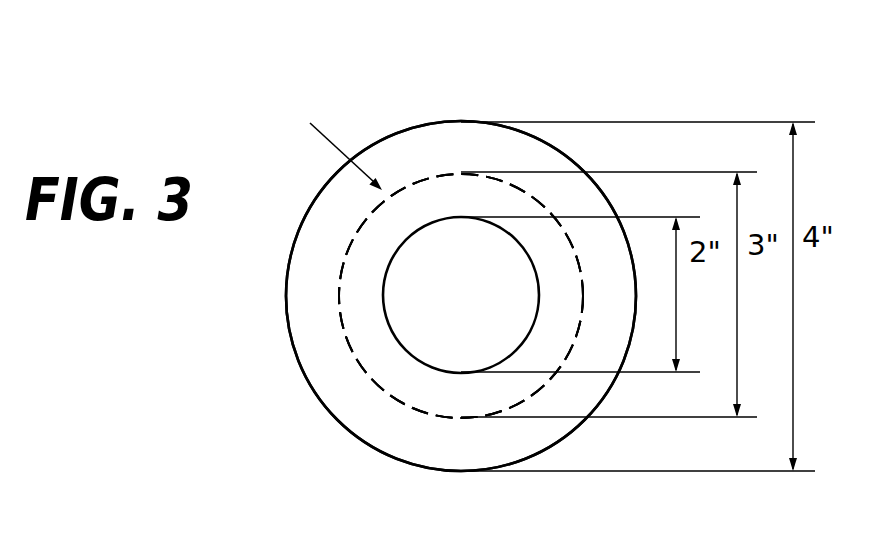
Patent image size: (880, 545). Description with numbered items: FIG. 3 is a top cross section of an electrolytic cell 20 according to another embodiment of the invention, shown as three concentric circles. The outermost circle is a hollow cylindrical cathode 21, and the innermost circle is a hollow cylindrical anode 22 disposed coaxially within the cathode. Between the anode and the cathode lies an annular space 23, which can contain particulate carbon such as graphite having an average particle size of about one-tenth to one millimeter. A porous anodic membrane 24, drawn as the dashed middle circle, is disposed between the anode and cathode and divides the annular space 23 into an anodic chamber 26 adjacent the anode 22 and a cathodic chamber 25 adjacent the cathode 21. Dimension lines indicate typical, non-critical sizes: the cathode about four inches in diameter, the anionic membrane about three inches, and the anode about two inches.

The cell 20 is at (440, 93).
The hollow cylindrical cathode 21 is at (540, 141).
The hollow cylindrical anode 22 is at (482, 372).
The annular space 23 is at (538, 195).
The porous anodic membrane 24 is at (362, 357).
The cathodic chamber 25 is at (306, 268).
The anodic chamber 26 is at (360, 312).